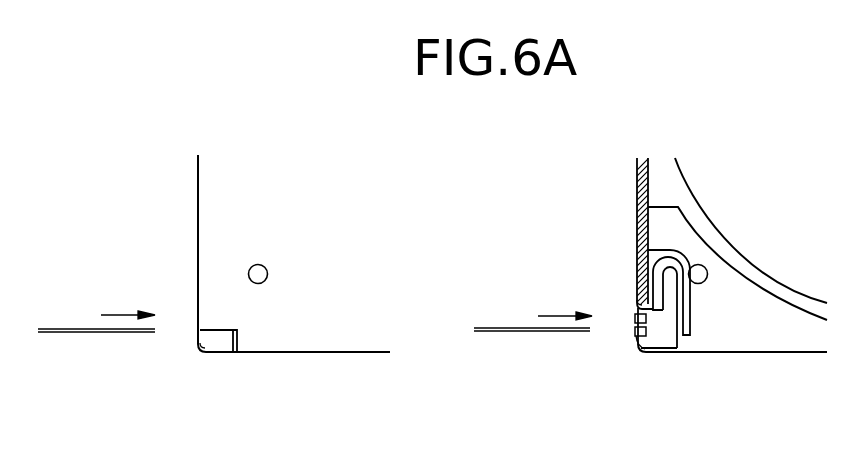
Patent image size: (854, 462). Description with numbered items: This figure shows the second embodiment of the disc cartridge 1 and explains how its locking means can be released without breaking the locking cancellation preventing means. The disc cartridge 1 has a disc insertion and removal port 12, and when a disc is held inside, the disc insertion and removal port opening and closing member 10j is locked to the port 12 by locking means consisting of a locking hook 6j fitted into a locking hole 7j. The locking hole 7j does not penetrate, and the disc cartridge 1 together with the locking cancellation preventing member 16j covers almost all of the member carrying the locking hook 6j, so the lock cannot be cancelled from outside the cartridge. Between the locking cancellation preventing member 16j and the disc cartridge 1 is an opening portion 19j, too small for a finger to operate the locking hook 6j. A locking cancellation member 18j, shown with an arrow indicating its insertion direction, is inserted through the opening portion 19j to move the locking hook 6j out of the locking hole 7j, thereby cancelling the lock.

The disc cartridge 1 is at (212, 183).
The disc insertion and removal port 12 is at (355, 352).
The locking cancellation preventing member 16j is at (212, 352).
The locking cancellation member 18j is at (66, 329).
The disc insertion and removal port opening and closing member 10j is at (753, 337).
The locking hole 7j is at (637, 298).
The locking hook 6j is at (636, 313).
The opening portion 19j is at (636, 337).